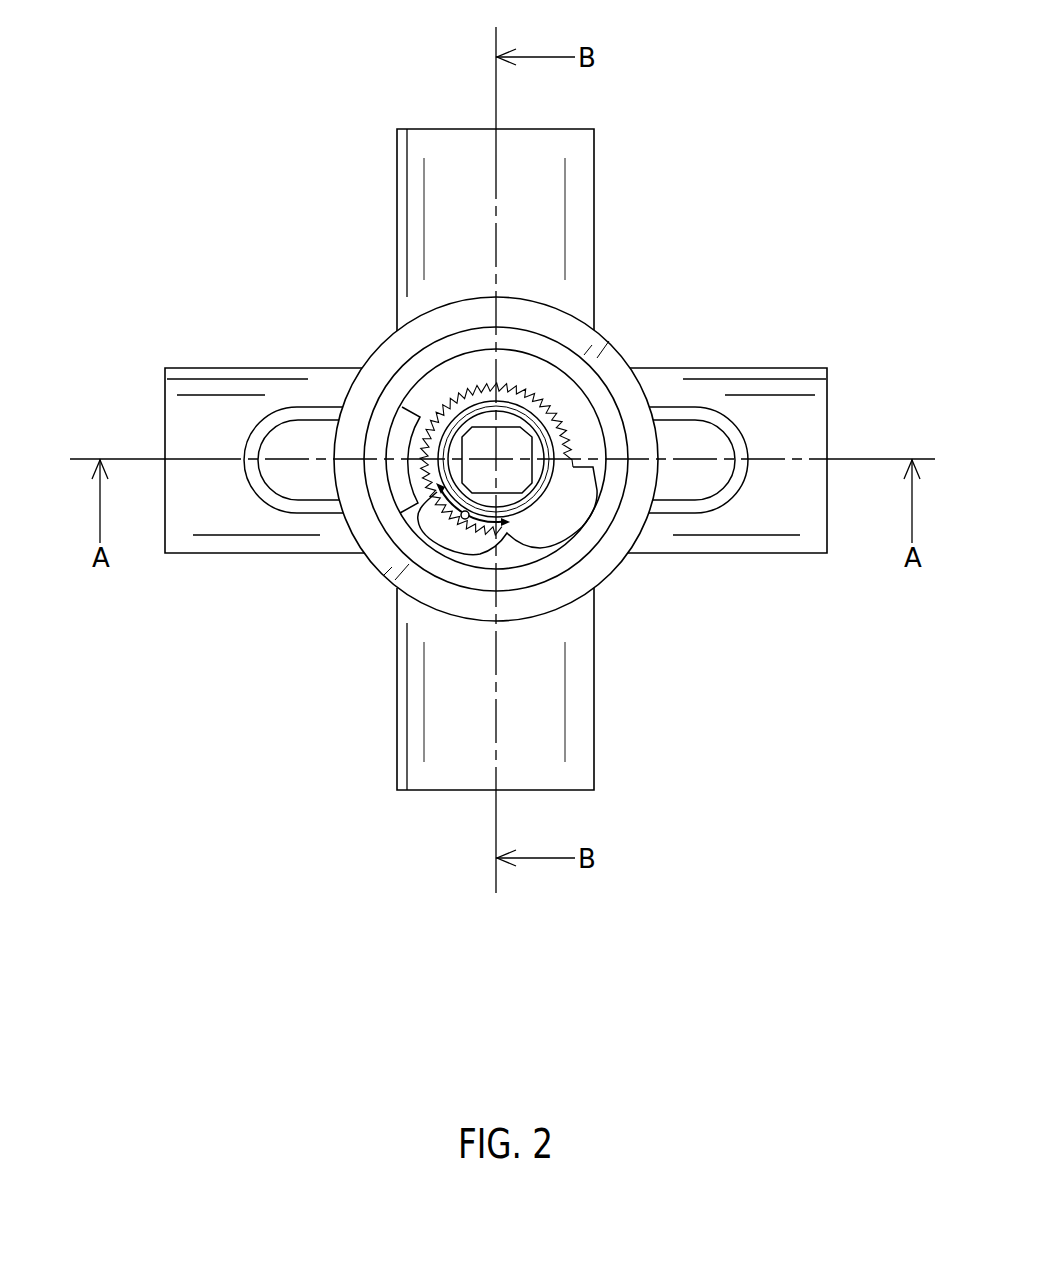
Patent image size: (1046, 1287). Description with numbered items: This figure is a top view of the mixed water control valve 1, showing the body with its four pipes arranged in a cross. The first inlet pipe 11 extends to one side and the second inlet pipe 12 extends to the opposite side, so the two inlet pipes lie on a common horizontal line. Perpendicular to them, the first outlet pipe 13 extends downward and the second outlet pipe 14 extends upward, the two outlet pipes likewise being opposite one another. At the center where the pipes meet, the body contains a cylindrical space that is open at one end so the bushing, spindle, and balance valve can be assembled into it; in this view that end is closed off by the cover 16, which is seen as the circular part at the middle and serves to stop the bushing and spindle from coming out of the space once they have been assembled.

The mixed water control valve 1 is at (763, 211).
The first inlet pipe 11 is at (165, 403).
The second inlet pipe 12 is at (827, 420).
The first outlet pipe 13 is at (422, 790).
The second outlet pipe 14 is at (447, 129).
The cover 16 is at (613, 338).